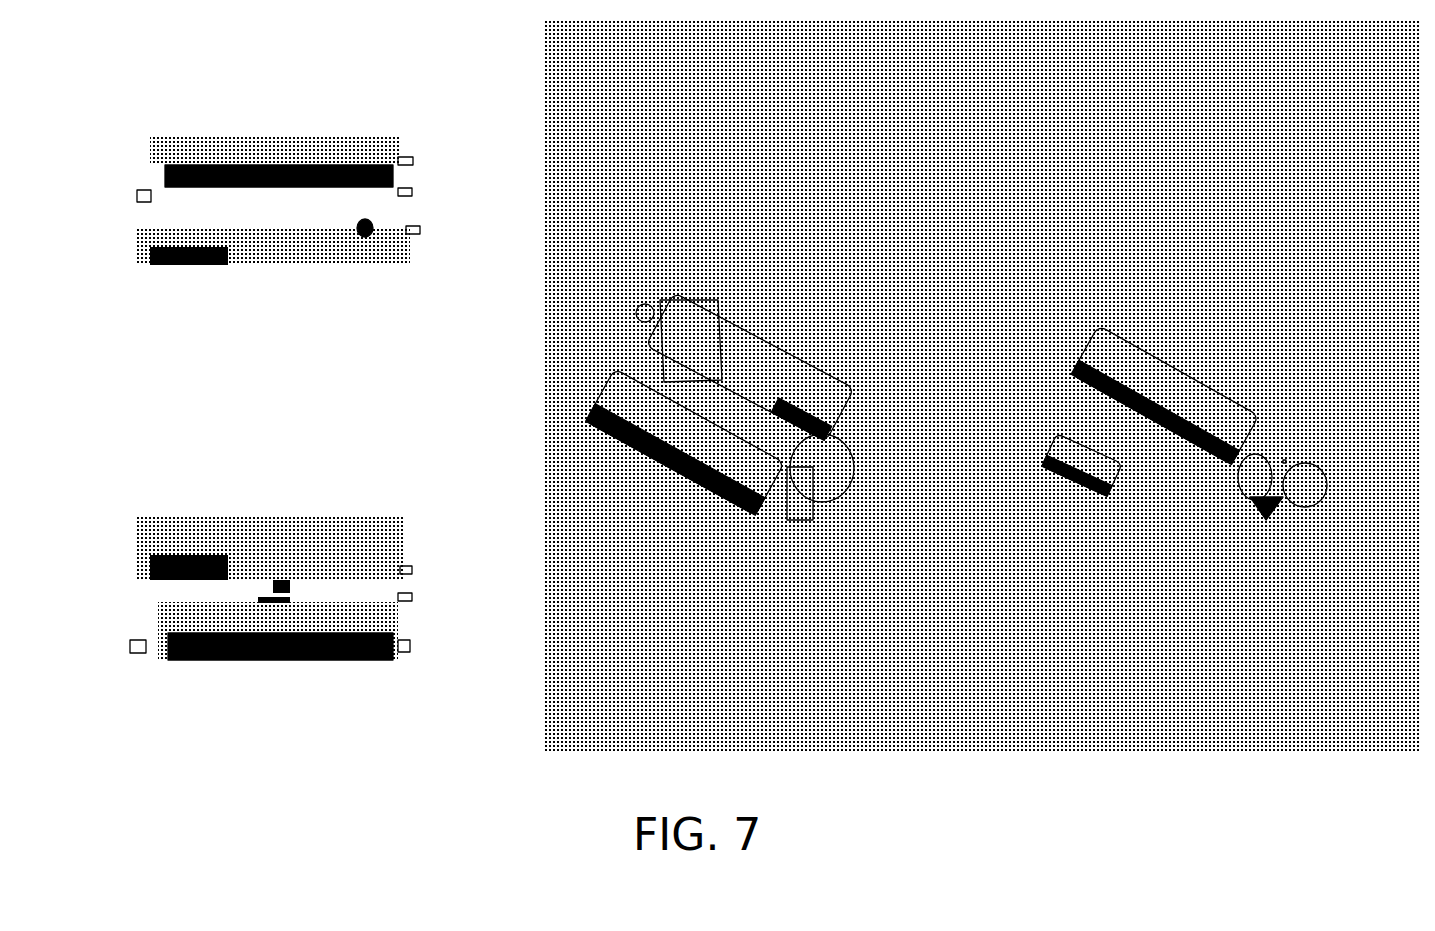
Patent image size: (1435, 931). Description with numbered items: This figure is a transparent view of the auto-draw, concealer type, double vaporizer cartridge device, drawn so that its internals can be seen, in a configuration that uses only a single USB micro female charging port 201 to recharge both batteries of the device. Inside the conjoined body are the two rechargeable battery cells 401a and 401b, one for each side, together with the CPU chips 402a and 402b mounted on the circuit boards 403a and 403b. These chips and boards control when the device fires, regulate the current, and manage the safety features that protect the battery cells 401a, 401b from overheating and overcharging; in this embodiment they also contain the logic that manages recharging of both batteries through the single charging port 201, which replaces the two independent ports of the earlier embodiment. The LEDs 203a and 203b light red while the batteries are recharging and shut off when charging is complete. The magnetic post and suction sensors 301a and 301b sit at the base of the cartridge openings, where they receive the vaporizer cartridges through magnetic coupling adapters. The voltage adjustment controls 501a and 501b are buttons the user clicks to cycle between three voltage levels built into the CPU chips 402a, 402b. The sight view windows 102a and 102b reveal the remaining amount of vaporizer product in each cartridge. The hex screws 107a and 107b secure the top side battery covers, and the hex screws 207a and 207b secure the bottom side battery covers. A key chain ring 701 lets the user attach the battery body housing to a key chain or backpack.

The sight view window 102a is at (1177, 515).
The sight view window 102b is at (1275, 395).
The hex screw 107a is at (400, 523).
The hex screw 107b is at (410, 192).
The single USB micro female charging port 201 is at (773, 523).
The LED 203a is at (365, 232).
The LED 203b is at (655, 352).
The hex screw 207a is at (137, 527).
The hex screw 207b is at (138, 195).
The magnetic post and suction sensor 301a is at (190, 228).
The magnetic post and suction sensor 301b is at (817, 390).
The rechargeable battery cell 401a is at (277, 635).
The rechargeable battery cell 401b is at (272, 150).
The CPU chip 402a is at (281, 228).
The CPU chip 402b is at (277, 600).
The circuit board 403a is at (241, 228).
The circuit board 403b is at (150, 150).
The voltage adjustment control 501a is at (418, 228).
The voltage adjustment control 501b is at (420, 157).
The key chain ring 701 is at (633, 303).